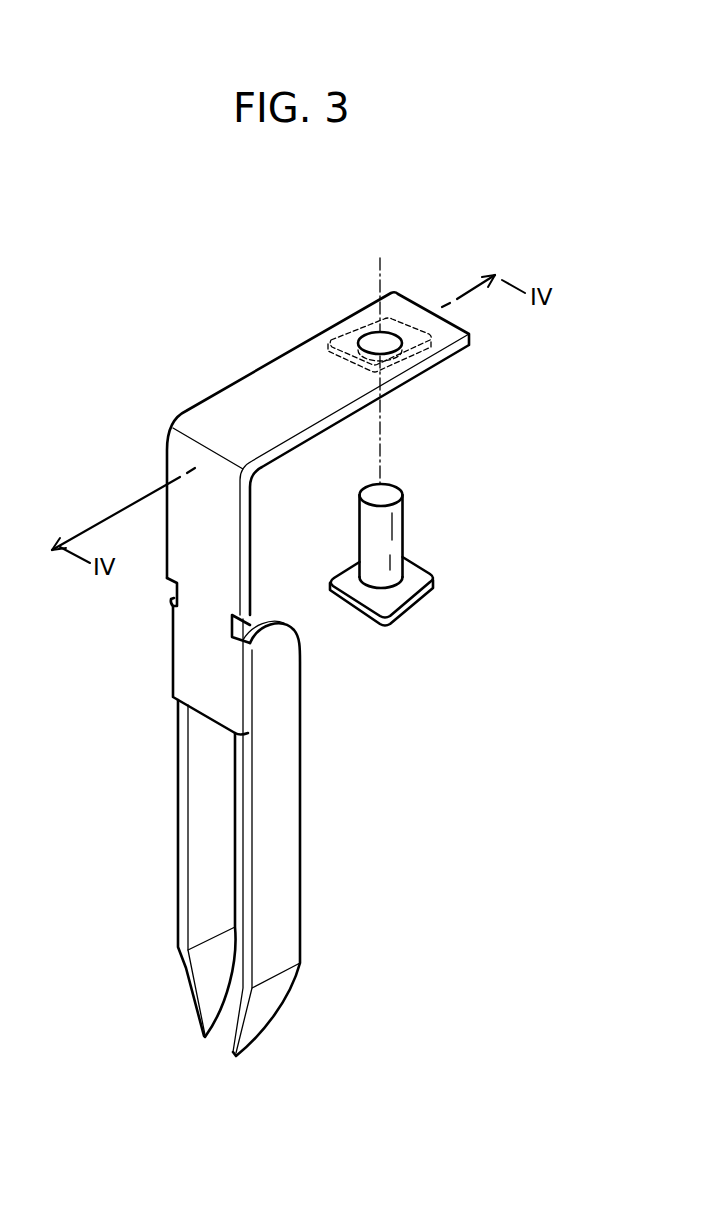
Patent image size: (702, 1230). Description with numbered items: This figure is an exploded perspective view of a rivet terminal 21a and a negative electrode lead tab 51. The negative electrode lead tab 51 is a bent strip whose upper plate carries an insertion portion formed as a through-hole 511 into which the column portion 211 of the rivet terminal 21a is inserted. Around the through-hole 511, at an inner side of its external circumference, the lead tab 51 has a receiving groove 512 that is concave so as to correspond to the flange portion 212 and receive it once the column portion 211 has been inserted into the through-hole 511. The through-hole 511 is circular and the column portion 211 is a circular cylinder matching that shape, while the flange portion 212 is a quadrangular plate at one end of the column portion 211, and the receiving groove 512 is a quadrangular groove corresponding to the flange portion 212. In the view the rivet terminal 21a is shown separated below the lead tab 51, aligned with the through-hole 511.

The negative electrode lead tab 51 is at (166, 449).
The through-hole 511 is at (372, 332).
The receiving groove 512 is at (343, 365).
The rivet terminal 21a is at (453, 555).
The column portion 211 is at (397, 530).
The flange portion 212 is at (420, 580).